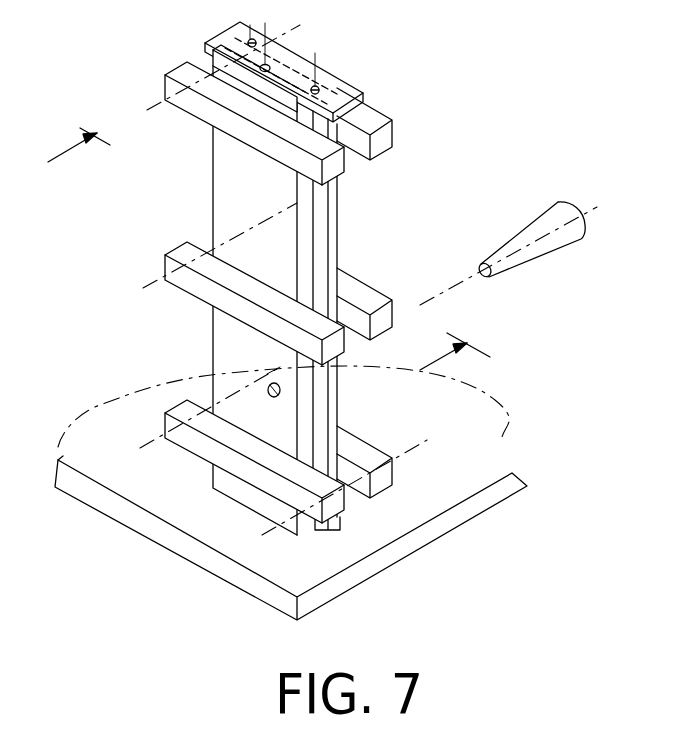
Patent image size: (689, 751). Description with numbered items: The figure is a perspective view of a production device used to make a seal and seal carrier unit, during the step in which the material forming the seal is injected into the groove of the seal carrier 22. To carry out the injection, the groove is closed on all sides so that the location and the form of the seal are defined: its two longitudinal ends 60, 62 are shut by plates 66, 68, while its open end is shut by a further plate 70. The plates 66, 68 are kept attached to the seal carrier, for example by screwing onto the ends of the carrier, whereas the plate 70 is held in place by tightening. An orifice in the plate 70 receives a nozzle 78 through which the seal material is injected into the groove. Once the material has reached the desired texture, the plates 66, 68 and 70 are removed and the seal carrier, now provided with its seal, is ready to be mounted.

The support column 22 is at (330, 418).
The longitudinal end of the groove 60 is at (413, 108).
The longitudinal end of the groove 62 is at (340, 535).
The plate 66 is at (347, 93).
The plate 68 is at (325, 562).
The plate 70 is at (223, 383).
The nozzle 78 is at (563, 247).